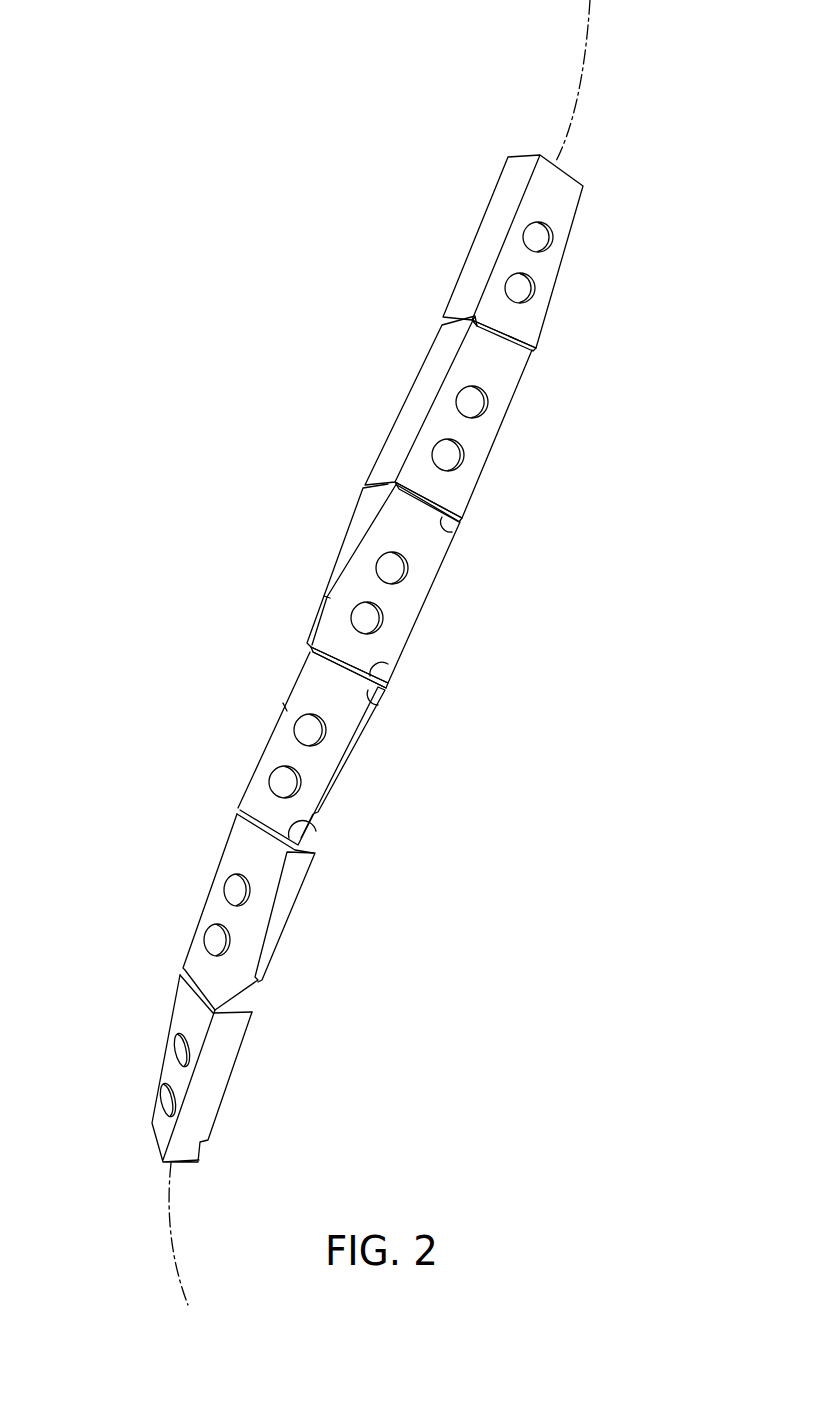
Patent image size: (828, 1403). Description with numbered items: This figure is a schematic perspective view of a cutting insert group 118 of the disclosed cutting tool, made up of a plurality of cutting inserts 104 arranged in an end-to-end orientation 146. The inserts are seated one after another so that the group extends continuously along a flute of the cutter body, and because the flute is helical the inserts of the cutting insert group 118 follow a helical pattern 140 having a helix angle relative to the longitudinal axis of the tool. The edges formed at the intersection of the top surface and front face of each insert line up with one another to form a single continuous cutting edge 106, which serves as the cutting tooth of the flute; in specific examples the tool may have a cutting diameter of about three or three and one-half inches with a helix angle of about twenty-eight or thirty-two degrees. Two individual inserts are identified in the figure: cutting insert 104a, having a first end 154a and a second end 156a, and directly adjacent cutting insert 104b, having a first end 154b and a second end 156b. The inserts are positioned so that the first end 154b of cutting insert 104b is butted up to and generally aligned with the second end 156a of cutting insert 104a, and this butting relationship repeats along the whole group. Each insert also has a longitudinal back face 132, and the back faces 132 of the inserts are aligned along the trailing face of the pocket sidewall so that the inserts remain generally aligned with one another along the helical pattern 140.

The cutting insert 104 is at (578, 228).
The cutting insert 104a is at (346, 760).
The cutting insert 104b is at (412, 622).
The continuous cutting edge 106 is at (432, 609).
The cutting insert group 118 is at (606, 156).
The longitudinal back face 132 is at (324, 598).
The helical pattern 140 is at (580, 67).
The end-to-end orientation 146 is at (128, 1185).
The first end 154a is at (316, 831).
The first end 154b is at (388, 664).
The second end 156a is at (378, 705).
The second end 156b is at (452, 532).